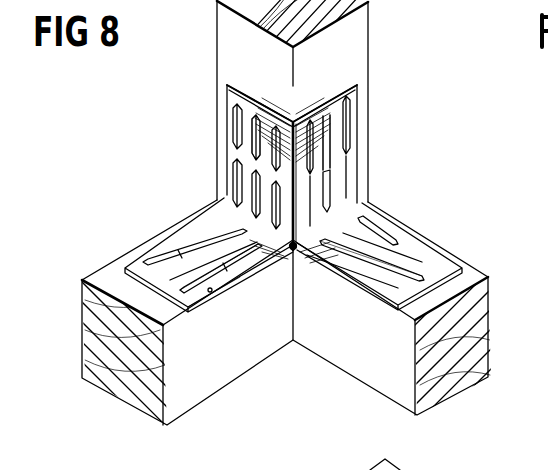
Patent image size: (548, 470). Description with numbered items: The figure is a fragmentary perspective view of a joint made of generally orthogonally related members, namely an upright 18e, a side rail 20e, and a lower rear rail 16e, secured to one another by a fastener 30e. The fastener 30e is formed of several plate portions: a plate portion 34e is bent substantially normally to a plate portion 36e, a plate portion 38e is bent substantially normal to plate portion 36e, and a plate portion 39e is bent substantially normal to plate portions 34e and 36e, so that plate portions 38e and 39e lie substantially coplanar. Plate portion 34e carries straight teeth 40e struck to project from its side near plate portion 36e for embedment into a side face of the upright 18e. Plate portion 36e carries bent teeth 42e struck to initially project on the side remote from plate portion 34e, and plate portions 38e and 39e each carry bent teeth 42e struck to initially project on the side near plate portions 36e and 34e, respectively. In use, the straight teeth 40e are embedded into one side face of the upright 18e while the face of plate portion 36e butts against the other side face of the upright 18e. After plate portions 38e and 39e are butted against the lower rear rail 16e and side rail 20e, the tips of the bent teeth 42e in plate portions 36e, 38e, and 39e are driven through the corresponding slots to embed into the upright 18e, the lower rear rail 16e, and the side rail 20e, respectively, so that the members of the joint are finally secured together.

The lower rear rail 16e is at (367, 367).
The upright 18e is at (237, 43).
The side rail 20e is at (197, 377).
The fastener 30e is at (304, 215).
The plate portion 34e is at (230, 145).
The plate portion 36e is at (355, 148).
The plate portion 38e is at (442, 262).
The plate portion 39e is at (210, 293).
The straight teeth 40e is at (257, 147).
The bent teeth 42e is at (330, 136).